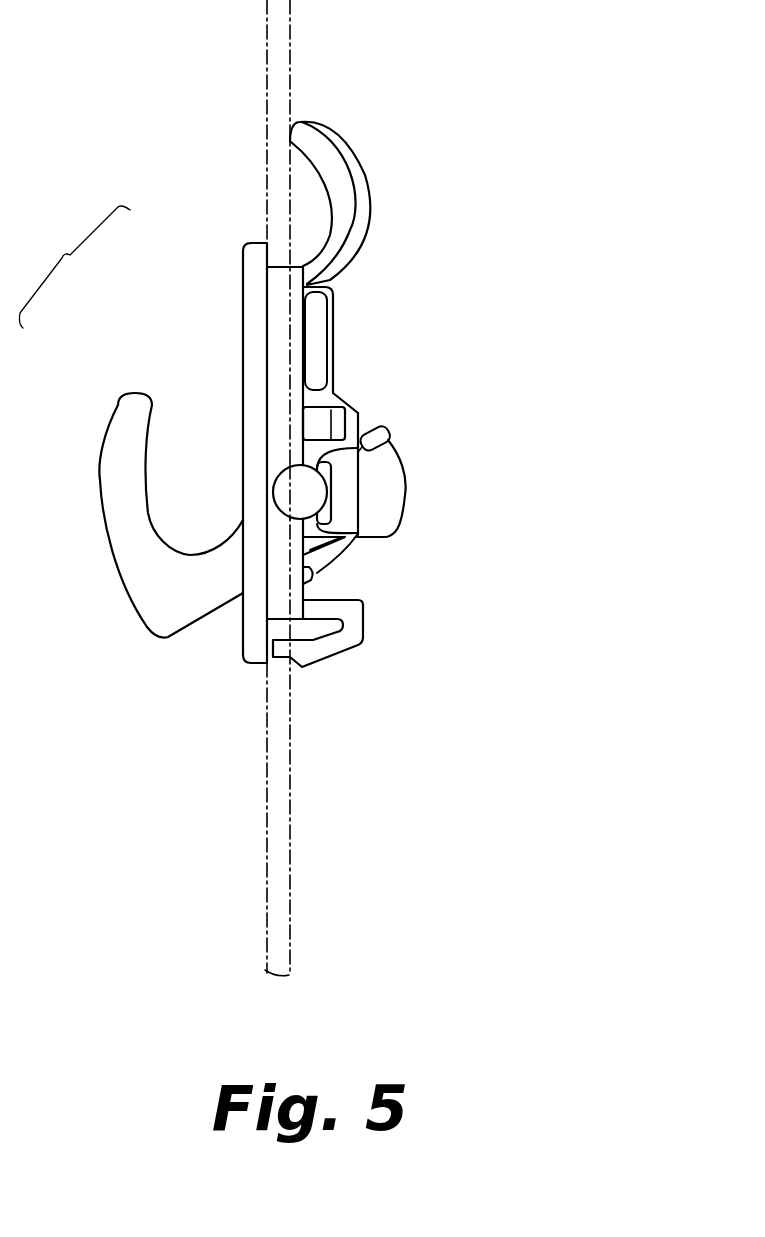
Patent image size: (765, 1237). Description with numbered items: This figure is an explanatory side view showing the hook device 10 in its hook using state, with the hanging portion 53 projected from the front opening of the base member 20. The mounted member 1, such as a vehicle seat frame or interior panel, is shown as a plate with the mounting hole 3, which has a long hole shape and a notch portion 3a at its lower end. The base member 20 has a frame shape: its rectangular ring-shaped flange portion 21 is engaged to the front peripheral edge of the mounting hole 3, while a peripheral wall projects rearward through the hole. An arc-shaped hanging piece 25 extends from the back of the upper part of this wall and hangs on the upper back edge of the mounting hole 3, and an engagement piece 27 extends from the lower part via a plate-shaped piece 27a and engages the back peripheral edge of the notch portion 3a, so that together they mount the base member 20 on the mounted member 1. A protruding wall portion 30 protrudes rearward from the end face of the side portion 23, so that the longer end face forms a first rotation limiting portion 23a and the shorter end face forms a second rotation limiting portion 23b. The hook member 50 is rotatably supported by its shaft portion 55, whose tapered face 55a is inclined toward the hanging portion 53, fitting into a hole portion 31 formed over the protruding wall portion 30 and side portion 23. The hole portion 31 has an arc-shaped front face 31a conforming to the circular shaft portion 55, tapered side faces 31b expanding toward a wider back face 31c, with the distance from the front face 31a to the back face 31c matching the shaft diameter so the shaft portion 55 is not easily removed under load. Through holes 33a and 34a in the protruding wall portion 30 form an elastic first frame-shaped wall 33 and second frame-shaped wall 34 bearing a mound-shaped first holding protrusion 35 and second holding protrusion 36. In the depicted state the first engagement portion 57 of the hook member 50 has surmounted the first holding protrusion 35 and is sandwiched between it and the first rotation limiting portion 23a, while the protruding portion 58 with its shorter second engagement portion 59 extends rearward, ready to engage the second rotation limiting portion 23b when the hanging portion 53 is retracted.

The mounted member 1 is at (289, 932).
The mounting hole 3 is at (280, 263).
The notch portion 3a is at (280, 677).
The hook device 10 is at (40, 247).
The base member 20 is at (231, 282).
The flange portion 21 is at (245, 252).
The side portion 23 is at (283, 603).
The first rotation limiting portion 23a is at (305, 312).
The second rotation limiting portion 23b is at (283, 586).
The hanging piece 25 is at (342, 169).
The engagement piece 27 is at (335, 645).
The plate-shaped piece 27a is at (320, 610).
The protruding wall portion 30 is at (365, 403).
The hole portion 31 is at (330, 510).
The front face 31a is at (277, 492).
The side face 31b is at (388, 441).
The back face 31c is at (331, 474).
The first frame-shaped wall 33 is at (340, 395).
The through hole 33a is at (358, 413).
The second frame-shaped wall 34 is at (335, 554).
The through hole 34a is at (342, 542).
The first holding protrusion 35 is at (335, 396).
The second holding protrusion 36 is at (317, 573).
The hook member 50 is at (107, 398).
The hanging portion 53 is at (103, 523).
The shaft portion 55 is at (323, 491).
The tapered face 55a is at (277, 475).
The first engagement portion 57 is at (315, 328).
The protruding portion 58 is at (398, 482).
The second engagement portion 59 is at (380, 428).